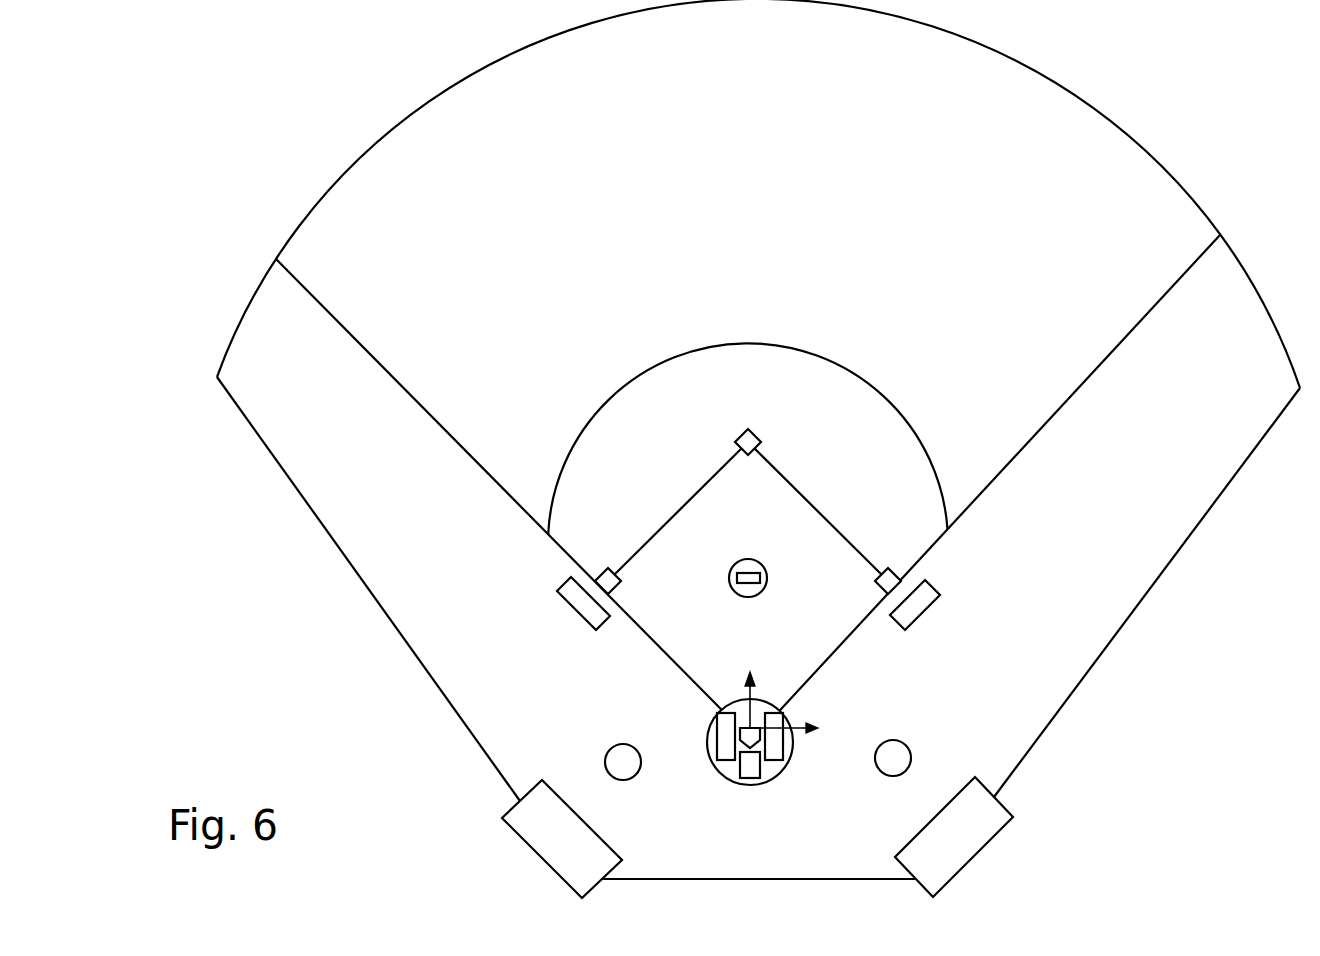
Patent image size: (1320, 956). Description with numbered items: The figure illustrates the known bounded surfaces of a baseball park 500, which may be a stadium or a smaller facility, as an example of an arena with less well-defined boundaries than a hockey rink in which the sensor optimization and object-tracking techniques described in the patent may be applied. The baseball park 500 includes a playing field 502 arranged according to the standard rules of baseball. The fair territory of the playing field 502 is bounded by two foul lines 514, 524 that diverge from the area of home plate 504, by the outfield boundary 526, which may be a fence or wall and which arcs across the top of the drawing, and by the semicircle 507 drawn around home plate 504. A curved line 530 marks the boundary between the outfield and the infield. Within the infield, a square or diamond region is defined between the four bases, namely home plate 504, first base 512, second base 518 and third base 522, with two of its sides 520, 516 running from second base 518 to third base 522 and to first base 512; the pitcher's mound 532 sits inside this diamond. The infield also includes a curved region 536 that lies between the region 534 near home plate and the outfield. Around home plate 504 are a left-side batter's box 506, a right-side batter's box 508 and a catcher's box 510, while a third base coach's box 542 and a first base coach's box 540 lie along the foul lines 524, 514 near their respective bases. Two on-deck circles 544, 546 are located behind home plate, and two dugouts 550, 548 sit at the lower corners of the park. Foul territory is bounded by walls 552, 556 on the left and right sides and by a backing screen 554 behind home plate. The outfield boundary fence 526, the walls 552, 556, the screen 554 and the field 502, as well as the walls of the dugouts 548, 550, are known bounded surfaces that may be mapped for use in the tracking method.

The baseball park 500 is at (353, 134).
The playing field 502 is at (768, 190).
The home plate 504 is at (736, 758).
The left-side batter's box 506 is at (717, 714).
The semicircle around home plate 507 is at (786, 762).
The right-side batter's box 508 is at (783, 714).
The catcher's box 510 is at (750, 780).
The first base 512 is at (878, 576).
The foul line 514 is at (1066, 406).
The side of the infield diamond 516 is at (806, 498).
The second base 518 is at (740, 436).
The side of the infield diamond 520 is at (690, 498).
The third base 522 is at (622, 576).
The foul line 524 is at (420, 407).
The outfield boundary 526 is at (462, 80).
The boundary line between outfield and infield 530 is at (680, 354).
The pitcher's mound 532 is at (748, 558).
The infield region 534 is at (805, 628).
The curved region of the infield 536 is at (812, 415).
The first base coach's box 540 is at (937, 582).
The third base coach's box 542 is at (565, 580).
The on-deck circle 544 is at (641, 766).
The on-deck circle 546 is at (876, 766).
The dugout 548 is at (954, 837).
The dugout 550 is at (562, 839).
The wall 552 is at (382, 610).
The backing screen 554 is at (752, 881).
The wall 556 is at (1178, 560).